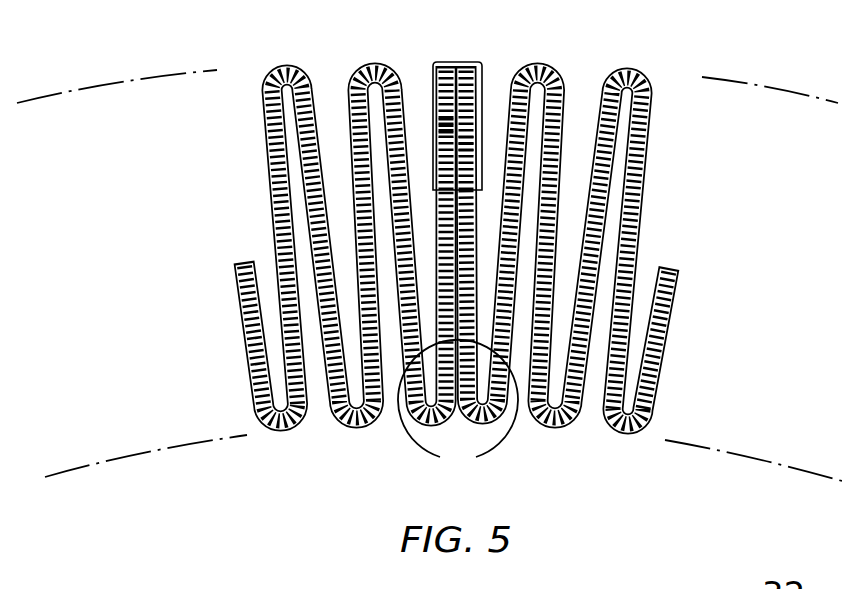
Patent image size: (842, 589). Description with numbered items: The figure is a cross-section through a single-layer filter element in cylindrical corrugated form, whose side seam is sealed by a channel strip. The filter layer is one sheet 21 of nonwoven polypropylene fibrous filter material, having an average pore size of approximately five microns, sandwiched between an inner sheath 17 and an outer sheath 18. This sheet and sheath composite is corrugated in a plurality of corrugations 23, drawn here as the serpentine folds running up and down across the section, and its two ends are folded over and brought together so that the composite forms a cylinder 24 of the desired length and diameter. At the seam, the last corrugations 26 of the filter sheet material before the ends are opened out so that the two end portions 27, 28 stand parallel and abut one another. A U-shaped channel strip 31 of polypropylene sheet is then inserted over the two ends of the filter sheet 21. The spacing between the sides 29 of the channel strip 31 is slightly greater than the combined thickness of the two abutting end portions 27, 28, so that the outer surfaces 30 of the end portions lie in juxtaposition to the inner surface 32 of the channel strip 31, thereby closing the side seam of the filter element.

The inner sheath 17 is at (353, 82).
The outer sheath 18 is at (363, 431).
The sheet 21 is at (667, 270).
The corrugations 23 is at (628, 70).
The cylinder 24 is at (270, 62).
The last corrugations 26 is at (458, 340).
The end portion 27 is at (447, 64).
The end portion 28 is at (470, 64).
The sides 29 is at (433, 81).
The outer surfaces 30 is at (443, 128).
The channel strip 31 is at (456, 62).
The inner surface 32 is at (470, 146).